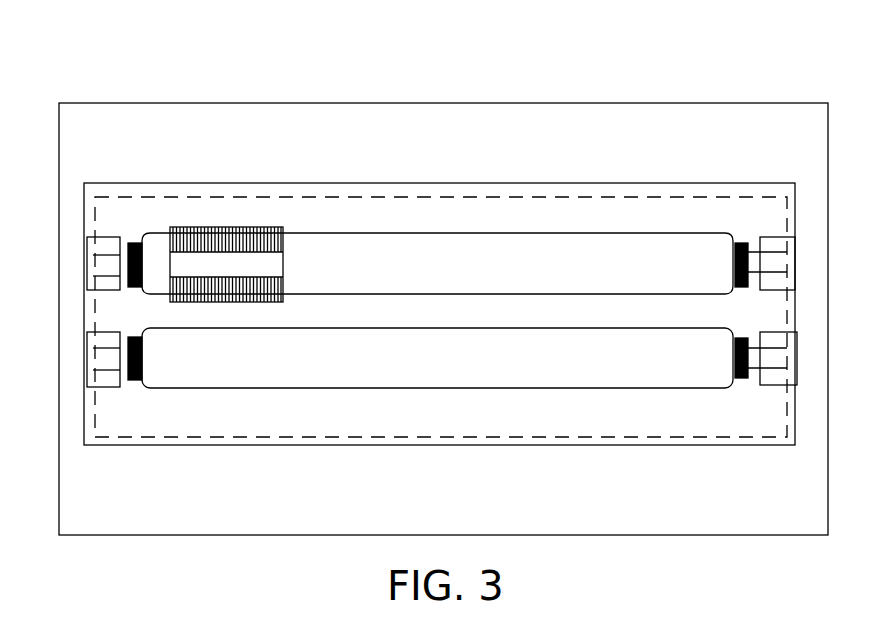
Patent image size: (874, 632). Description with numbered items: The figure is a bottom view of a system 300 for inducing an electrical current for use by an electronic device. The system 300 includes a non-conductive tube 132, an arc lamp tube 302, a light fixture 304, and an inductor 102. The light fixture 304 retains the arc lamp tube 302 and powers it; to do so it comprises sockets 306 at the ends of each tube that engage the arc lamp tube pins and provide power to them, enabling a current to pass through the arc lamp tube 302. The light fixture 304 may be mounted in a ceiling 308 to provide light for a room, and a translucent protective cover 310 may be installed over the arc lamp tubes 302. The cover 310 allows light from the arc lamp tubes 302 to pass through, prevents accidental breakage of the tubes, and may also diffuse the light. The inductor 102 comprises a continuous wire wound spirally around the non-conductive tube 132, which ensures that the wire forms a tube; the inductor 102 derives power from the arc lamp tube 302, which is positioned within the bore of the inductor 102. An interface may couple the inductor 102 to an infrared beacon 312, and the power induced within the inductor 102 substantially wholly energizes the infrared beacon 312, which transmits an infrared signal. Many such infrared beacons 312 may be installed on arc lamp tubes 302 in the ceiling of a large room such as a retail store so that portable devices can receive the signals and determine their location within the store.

The system 300 is at (430, 270).
The ceiling 308 is at (242, 152).
The light fixture 304 is at (403, 185).
The translucent protective cover 310 is at (485, 196).
The arc lamp tube 302 is at (368, 233).
The non-conductive tube 132 is at (168, 226).
The inductor 102 is at (226, 245).
The infrared beacon 312 is at (245, 274).
The sockets 306 is at (95, 236).